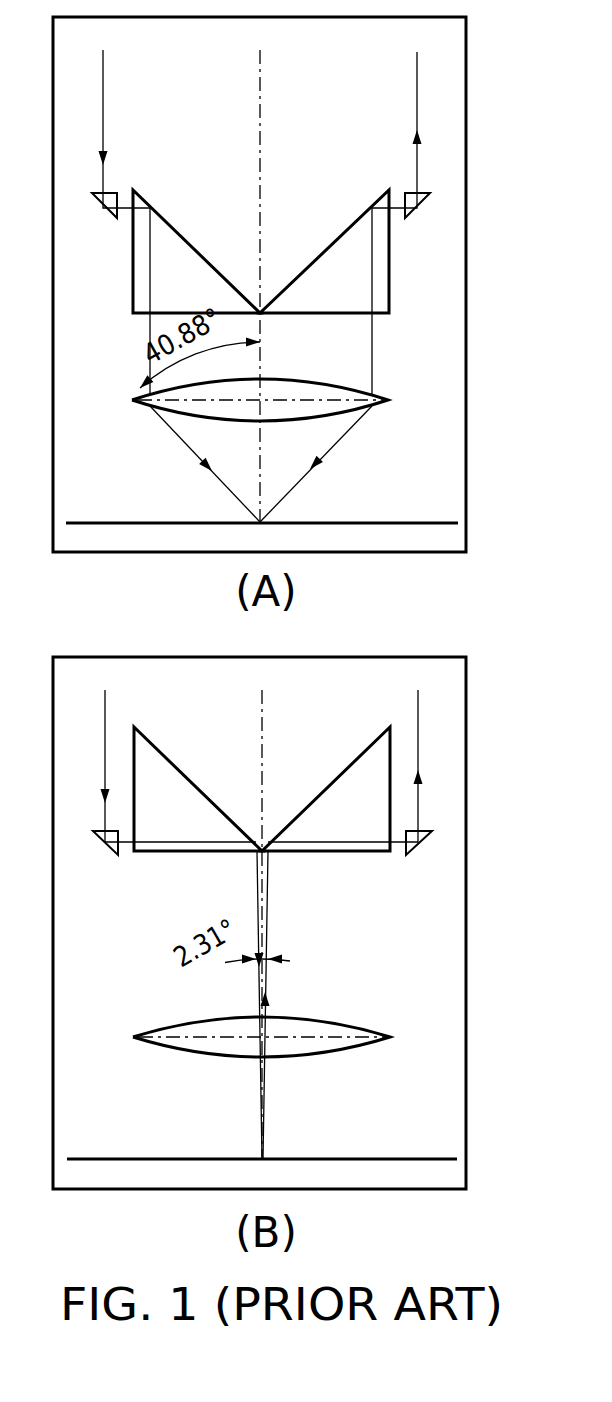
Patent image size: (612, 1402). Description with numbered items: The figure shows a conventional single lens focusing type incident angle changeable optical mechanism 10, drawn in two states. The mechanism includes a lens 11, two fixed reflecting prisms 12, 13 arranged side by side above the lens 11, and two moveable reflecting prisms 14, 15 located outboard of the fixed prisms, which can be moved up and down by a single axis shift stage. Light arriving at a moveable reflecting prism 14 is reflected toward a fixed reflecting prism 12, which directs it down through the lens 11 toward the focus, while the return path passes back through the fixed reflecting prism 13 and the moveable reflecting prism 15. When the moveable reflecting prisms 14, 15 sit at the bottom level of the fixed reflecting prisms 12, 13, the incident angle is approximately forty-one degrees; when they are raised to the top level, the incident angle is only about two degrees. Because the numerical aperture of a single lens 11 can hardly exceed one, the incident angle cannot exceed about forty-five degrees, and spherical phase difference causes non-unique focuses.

The single lens focusing type incident angle changeable optical mechanism 10 is at (288, 623).
The lens 11 is at (261, 703).
The fixed reflecting prism 12 is at (197, 520).
The fixed reflecting prism 13 is at (325, 520).
The moveable reflecting prism 14 is at (93, 535).
The moveable reflecting prism 15 is at (429, 534).